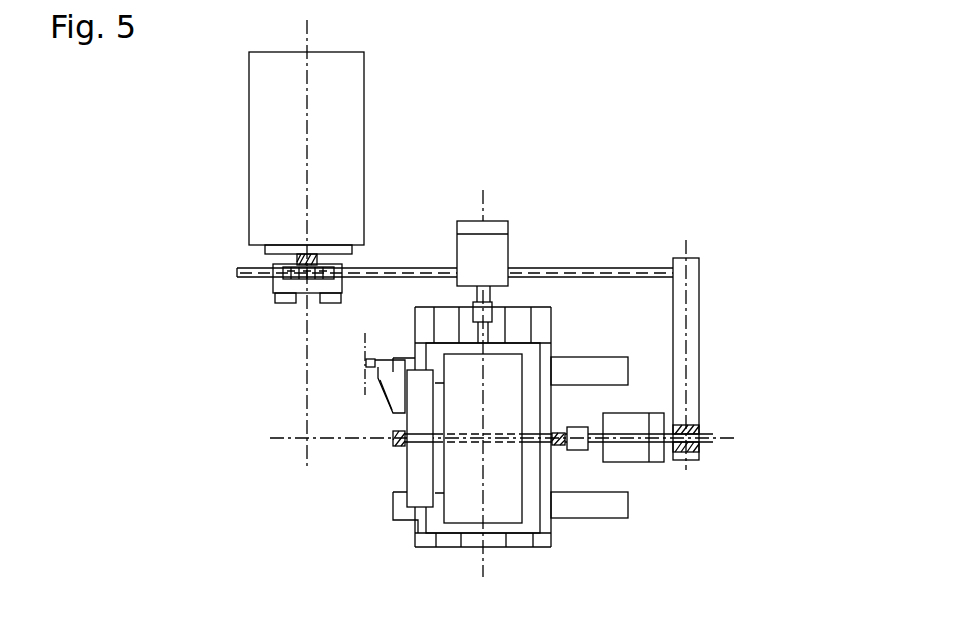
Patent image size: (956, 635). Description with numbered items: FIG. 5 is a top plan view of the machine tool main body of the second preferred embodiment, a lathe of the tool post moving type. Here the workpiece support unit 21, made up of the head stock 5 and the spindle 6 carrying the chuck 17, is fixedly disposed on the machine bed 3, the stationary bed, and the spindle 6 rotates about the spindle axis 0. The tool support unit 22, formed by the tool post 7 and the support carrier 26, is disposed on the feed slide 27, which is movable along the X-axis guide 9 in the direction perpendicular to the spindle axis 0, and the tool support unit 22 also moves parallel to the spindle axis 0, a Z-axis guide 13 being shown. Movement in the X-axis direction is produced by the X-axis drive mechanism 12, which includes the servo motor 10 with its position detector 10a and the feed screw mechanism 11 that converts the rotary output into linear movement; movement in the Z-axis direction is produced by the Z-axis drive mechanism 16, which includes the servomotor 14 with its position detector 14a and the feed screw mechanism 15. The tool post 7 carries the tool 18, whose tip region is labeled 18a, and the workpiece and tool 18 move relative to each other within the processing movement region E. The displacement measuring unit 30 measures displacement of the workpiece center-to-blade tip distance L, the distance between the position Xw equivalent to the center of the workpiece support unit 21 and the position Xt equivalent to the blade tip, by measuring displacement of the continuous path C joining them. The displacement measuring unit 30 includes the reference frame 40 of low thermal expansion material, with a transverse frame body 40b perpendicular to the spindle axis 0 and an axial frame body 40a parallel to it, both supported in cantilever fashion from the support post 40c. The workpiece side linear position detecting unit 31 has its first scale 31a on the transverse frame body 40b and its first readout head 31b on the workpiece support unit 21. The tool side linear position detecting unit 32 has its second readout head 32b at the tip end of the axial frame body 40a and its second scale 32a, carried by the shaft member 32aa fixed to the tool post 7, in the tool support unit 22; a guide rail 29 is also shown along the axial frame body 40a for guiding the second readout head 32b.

The spindle axis 0 is at (307, 84).
The machine bed 3 is at (497, 77).
The head stock 5 is at (265, 141).
The spindle 6 is at (312, 257).
The workpiece support unit 21 is at (133, 115).
The workpiece side linear position detecting unit 31 is at (86, 250).
The first scale 31a is at (276, 297).
The first readout head 31b is at (262, 251).
The chuck 17 is at (292, 292).
The center equivalent position of workpiece support unit Xw is at (287, 304).
The transverse frame body 40b is at (397, 268).
The path C is at (428, 266).
The Z-axis servo motor 14 is at (492, 248).
The position detector 14a is at (497, 226).
The feed screw mechanism 15 is at (487, 330).
The Z-axis drive mechanism 16 is at (640, 205).
The Z-axis guide 13 is at (450, 325).
The X-axis guide 9 is at (573, 362).
The feed slide 27 is at (542, 540).
The support carrier 26 is at (455, 510).
The tool support unit 22 is at (465, 549).
The tool post 7 is at (410, 468).
The tool 18 is at (370, 363).
The tool edge 18a is at (390, 386).
The workpiece center-to-blade tip distance L is at (356, 349).
The processing movement region E is at (290, 472).
The blade tip equivalent position Xt is at (403, 443).
The shaft member 32aa is at (497, 440).
The feed screw mechanism 11 is at (558, 447).
The X-axis servo motor 10 is at (628, 450).
The position detector 10a is at (658, 452).
The X-axis drive mechanism 12 is at (690, 566).
The reference frame 40 is at (709, 304).
The support post 40c is at (687, 287).
The guide rail 29 is at (700, 343).
The axial frame body 40a is at (700, 378).
The displacement measuring unit 30 is at (712, 402).
The second scale 32a is at (708, 445).
The second readout head 32b is at (695, 455).
The tool side linear position detecting unit 32 is at (795, 470).